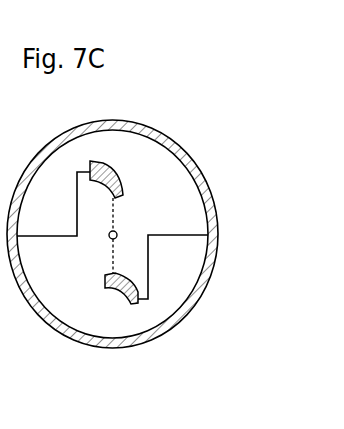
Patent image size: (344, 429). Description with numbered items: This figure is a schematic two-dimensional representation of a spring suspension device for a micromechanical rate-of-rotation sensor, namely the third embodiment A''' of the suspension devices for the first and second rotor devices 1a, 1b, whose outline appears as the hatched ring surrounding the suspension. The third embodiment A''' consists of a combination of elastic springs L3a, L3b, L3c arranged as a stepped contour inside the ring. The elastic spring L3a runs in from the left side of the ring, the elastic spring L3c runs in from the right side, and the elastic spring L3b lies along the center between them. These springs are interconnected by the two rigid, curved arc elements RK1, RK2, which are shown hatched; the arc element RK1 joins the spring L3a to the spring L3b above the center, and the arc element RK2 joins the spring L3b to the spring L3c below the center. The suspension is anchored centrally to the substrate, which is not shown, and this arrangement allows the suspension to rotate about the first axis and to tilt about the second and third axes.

The first rotor device 1a is at (120, 227).
The second rotor device 1b is at (180, 152).
The rigid curved arc element RK1 is at (106, 173).
The rigid curved arc element RK2 is at (117, 304).
The elastic spring L3a is at (55, 238).
The elastic spring L3b is at (117, 208).
The elastic spring L3c is at (180, 237).
The third embodiment of suspension device A''' is at (52, 341).